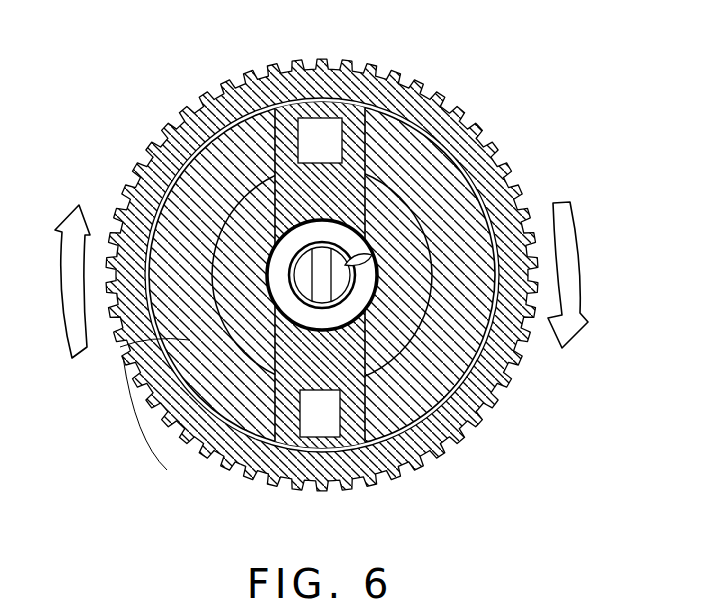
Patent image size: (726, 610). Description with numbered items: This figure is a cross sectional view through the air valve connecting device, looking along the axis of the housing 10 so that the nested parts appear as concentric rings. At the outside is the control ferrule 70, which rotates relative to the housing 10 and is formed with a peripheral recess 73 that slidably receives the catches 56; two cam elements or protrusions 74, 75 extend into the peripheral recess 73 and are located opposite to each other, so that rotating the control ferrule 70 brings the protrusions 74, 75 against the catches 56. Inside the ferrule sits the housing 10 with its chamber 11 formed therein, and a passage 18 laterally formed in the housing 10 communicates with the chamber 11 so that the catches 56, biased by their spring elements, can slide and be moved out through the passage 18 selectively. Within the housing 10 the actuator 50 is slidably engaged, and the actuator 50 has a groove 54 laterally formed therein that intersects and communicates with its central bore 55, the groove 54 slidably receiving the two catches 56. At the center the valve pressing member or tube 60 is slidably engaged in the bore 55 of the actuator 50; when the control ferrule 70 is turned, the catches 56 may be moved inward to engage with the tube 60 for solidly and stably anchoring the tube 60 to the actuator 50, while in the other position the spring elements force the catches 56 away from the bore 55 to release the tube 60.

The head body or outer housing 10 is at (120, 347).
The chamber 11 is at (517, 367).
The passage 18 is at (240, 88).
The actuating member or actuator 50 is at (478, 423).
The groove 54 is at (412, 465).
The bore 55 is at (357, 262).
The catches 56 is at (340, 100).
The valve pressing member or tube 60 is at (275, 488).
The control ferrule 70 is at (140, 163).
The peripheral recess 73 is at (187, 110).
The cam element or protrusion 74 is at (422, 140).
The cam element or protrusion 75 is at (195, 450).